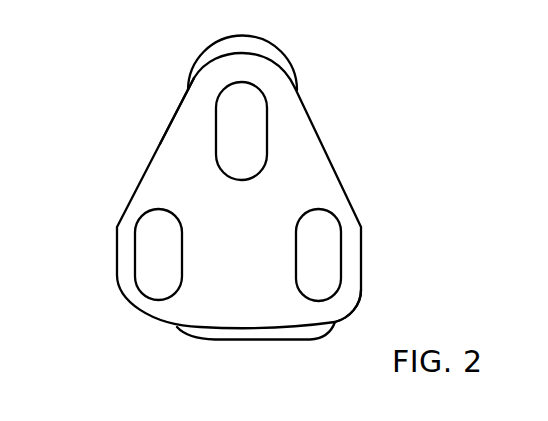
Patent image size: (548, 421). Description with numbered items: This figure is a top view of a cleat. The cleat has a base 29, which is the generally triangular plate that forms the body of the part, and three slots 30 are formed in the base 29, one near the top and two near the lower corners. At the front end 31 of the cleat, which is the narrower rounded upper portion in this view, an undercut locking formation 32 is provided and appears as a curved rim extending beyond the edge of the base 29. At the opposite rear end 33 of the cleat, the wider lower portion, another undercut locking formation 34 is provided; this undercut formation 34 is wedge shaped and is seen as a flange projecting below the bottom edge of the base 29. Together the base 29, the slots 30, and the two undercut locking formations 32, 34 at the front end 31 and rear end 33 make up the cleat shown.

The base 29 is at (250, 236).
The slots 30 is at (257, 117).
The front end 31 is at (213, 70).
The undercut locking formation 32 is at (271, 42).
The rear end 33 is at (338, 311).
The undercut locking formation 34 is at (193, 336).